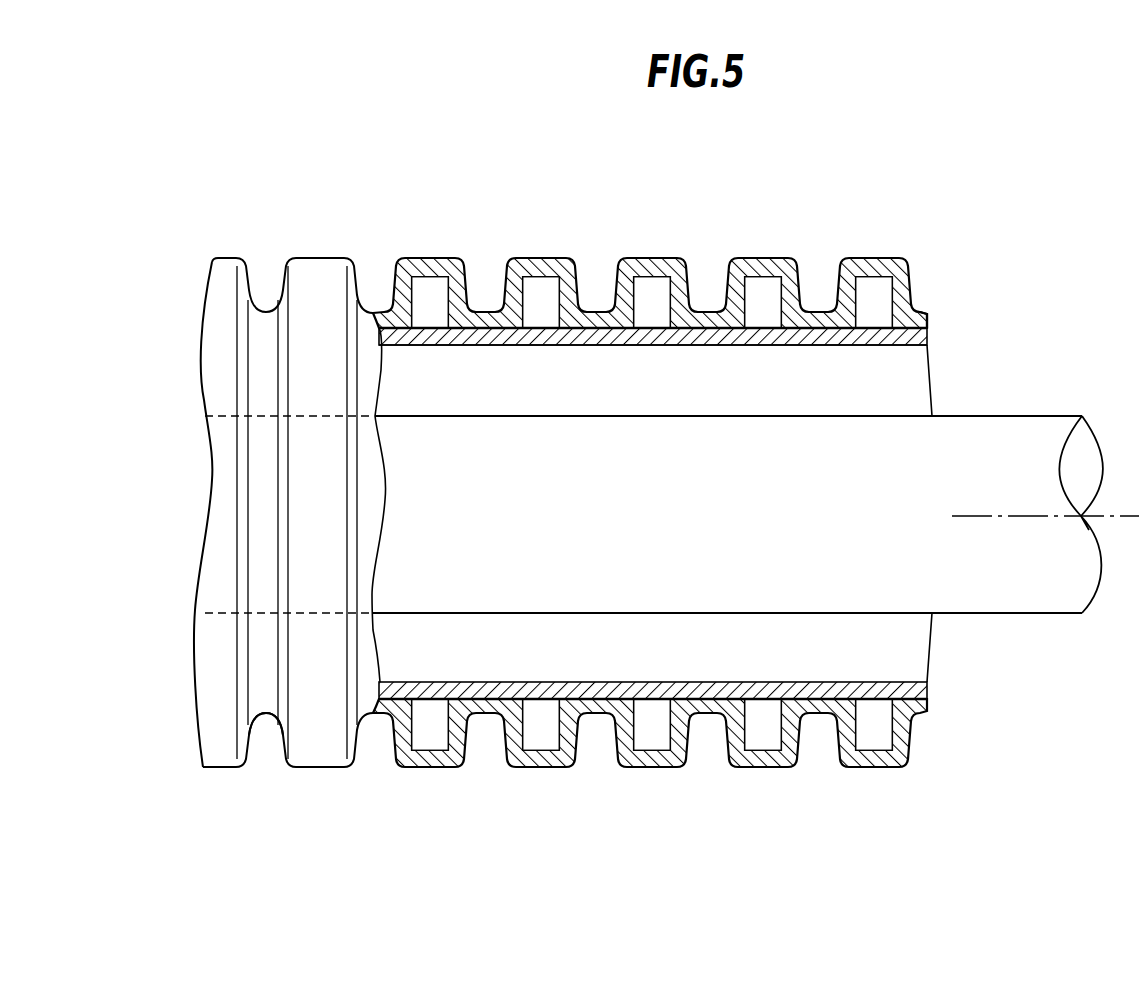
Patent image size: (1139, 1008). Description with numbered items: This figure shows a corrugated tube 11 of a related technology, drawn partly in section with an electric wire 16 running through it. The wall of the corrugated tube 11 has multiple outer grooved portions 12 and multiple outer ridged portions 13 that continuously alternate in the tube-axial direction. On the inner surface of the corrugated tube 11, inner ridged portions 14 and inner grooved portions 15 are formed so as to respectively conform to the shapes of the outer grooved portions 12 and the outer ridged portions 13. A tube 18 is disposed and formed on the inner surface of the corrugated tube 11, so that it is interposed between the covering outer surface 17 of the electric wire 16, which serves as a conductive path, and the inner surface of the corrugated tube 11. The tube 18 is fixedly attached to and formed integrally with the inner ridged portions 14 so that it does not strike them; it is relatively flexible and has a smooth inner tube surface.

The corrugated tube 11 is at (319, 248).
The outer grooved portions 12 is at (815, 292).
The outer ridged portions 13 is at (879, 262).
The inner ridged portions 14 is at (820, 347).
The inner grooved portions 15 is at (918, 301).
The electric wire 16 is at (1027, 600).
The covering outer surface 17 is at (965, 440).
The tube 18 is at (650, 348).